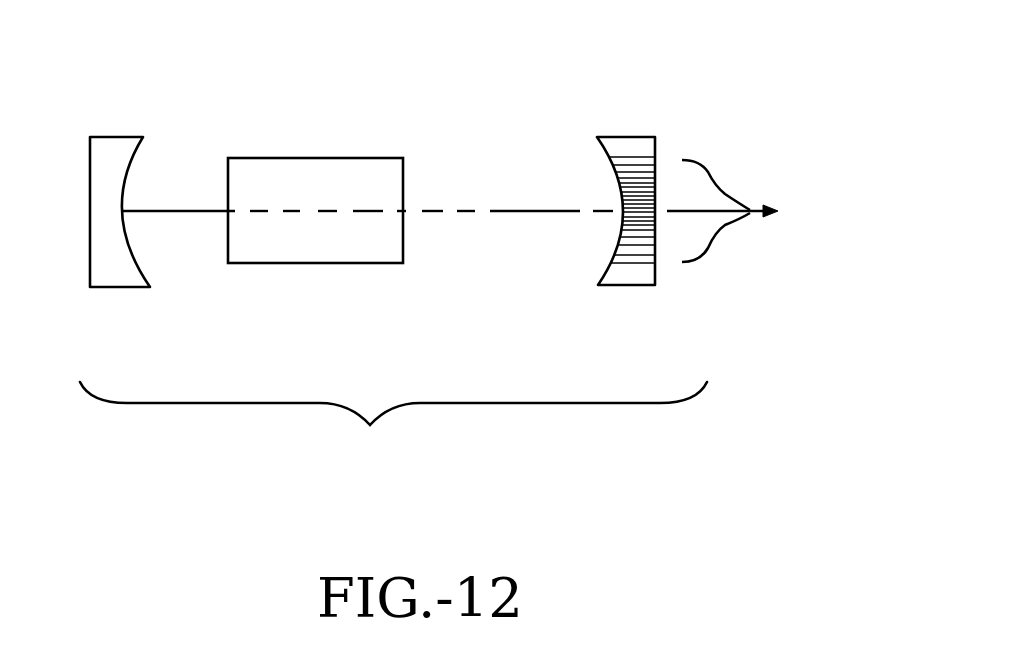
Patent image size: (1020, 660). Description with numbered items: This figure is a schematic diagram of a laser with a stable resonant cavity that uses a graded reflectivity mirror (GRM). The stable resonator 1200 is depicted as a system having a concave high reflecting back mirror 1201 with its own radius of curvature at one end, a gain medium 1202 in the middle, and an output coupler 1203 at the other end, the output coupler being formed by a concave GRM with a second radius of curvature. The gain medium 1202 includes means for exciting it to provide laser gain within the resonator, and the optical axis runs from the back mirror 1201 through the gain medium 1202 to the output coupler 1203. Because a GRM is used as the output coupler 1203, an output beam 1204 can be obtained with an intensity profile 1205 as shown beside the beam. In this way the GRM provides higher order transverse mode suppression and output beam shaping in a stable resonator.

The stable resonator 1200 is at (393, 445).
The concave high reflecting back mirror 1201 is at (147, 138).
The gain medium 1202 is at (307, 263).
The output coupler 1203 is at (597, 137).
The output beam 1204 is at (753, 215).
The intensity profile 1205 is at (708, 258).